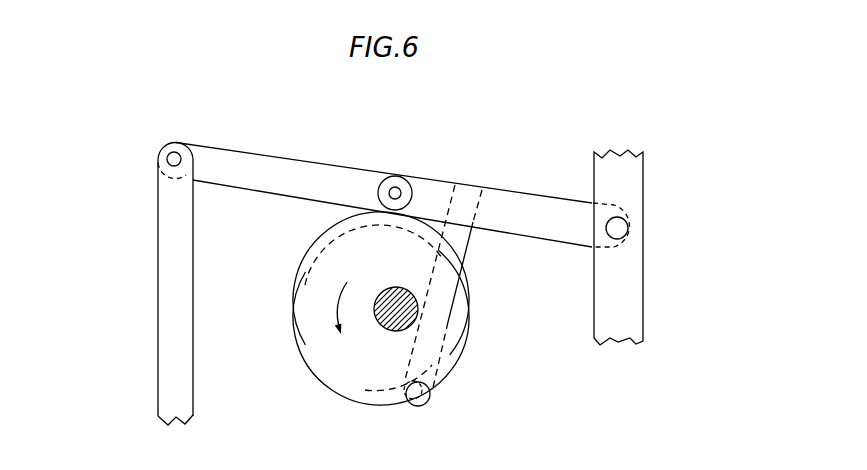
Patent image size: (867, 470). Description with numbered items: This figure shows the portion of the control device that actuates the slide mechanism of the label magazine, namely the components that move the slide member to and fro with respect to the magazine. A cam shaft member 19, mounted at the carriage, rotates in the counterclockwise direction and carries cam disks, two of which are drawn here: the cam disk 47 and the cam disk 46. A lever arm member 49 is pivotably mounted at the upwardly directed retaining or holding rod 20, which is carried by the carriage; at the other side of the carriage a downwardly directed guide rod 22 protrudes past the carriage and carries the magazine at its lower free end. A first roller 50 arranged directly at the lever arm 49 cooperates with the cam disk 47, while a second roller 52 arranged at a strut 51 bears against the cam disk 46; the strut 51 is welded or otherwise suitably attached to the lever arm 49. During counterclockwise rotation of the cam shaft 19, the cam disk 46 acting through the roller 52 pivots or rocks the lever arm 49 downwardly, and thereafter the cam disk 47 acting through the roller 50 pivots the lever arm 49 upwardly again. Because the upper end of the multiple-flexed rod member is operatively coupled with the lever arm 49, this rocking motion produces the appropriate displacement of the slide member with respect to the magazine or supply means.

The cam shaft member 19 is at (383, 332).
The retaining or holding rod 20 is at (600, 312).
The guide rod 22 is at (170, 303).
The cam disk 46 is at (292, 345).
The cam disk 47 is at (343, 233).
The lever arm member 49 is at (313, 178).
The first roller 50 is at (403, 190).
The strut 51 is at (461, 240).
The second roller 52 is at (432, 402).